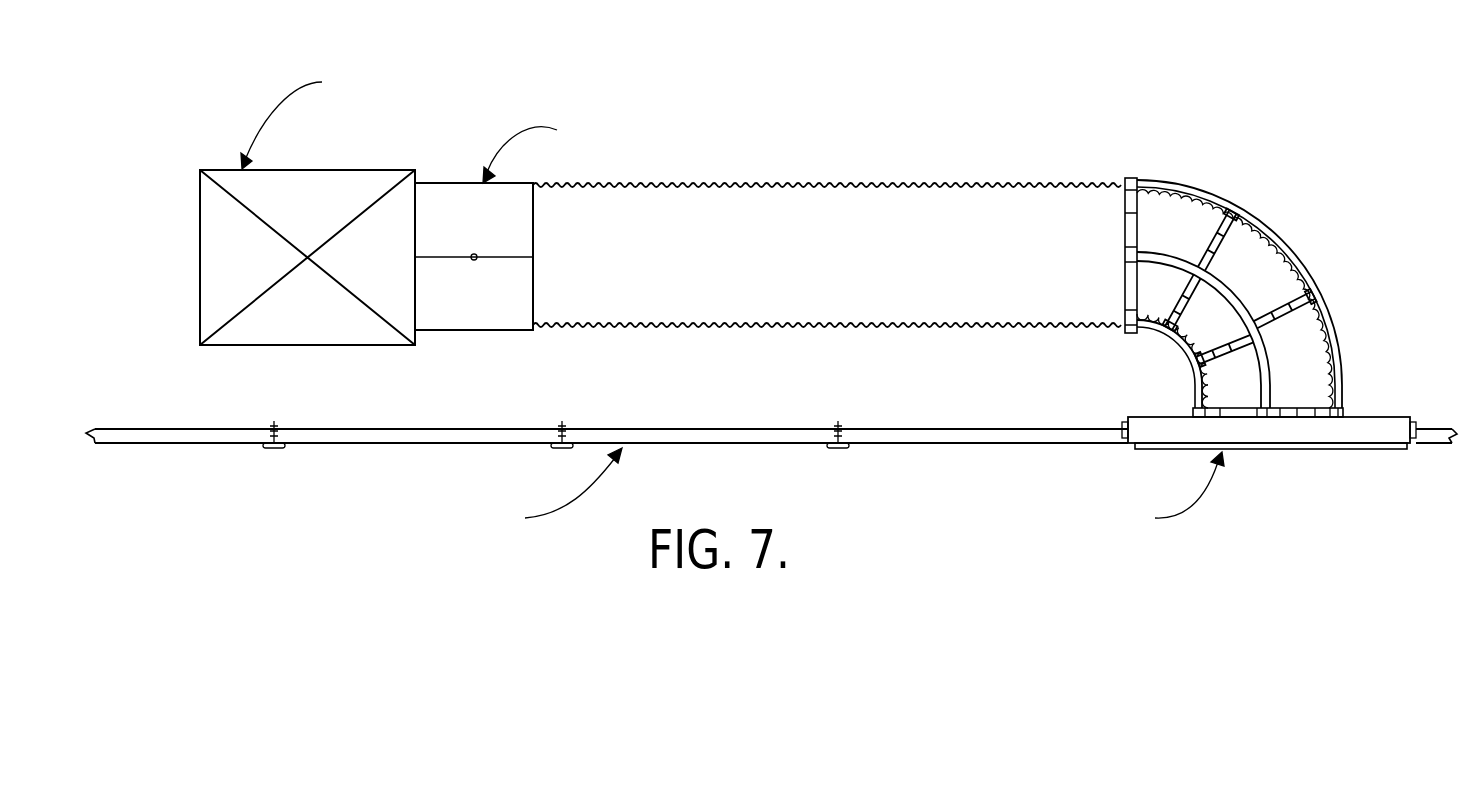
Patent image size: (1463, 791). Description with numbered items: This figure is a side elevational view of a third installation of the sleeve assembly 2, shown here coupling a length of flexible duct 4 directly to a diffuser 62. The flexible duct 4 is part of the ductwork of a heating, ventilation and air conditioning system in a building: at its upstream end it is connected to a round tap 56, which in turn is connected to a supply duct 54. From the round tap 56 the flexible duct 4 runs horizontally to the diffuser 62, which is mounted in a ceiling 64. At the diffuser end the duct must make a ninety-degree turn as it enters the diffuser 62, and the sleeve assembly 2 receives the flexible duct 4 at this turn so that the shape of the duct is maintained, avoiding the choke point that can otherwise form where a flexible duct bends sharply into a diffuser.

The sleeve assembly 2 is at (1327, 283).
The flexible duct 4 is at (846, 263).
The supply duct 54 is at (200, 345).
The round tap 56 is at (460, 333).
The diffuser 62 is at (1380, 417).
The ceiling 64 is at (212, 447).